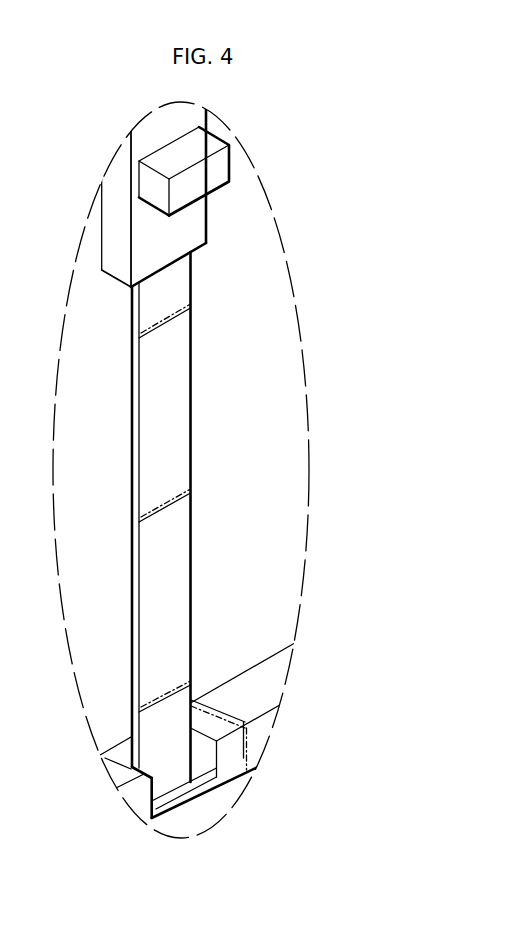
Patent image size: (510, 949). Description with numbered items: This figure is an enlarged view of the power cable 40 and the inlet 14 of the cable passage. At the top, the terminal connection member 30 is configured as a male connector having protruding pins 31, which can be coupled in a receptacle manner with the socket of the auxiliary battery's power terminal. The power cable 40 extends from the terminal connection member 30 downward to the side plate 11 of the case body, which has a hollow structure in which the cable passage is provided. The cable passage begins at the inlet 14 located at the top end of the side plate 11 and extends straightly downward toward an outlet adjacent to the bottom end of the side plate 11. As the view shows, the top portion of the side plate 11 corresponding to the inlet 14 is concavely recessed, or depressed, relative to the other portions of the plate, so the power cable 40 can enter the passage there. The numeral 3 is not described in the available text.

The base 3 is at (207, 817).
The side plate 11 is at (257, 690).
The inlet 14 is at (193, 765).
The terminal connection member 30 is at (185, 233).
The protruding pins 31 is at (208, 170).
The power cable 40 is at (163, 410).